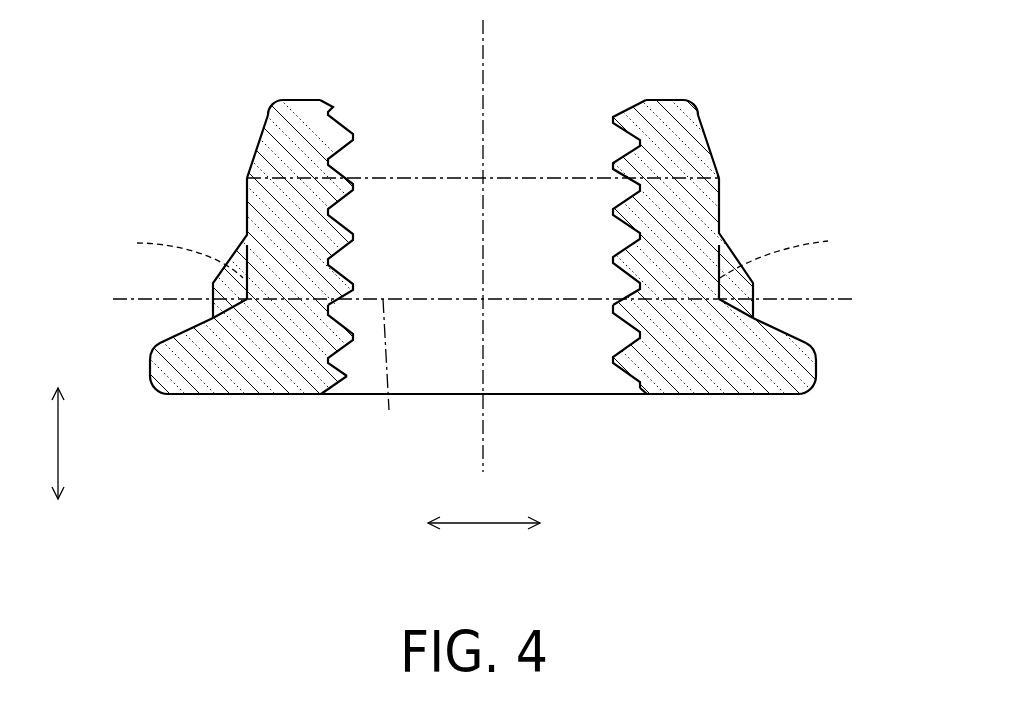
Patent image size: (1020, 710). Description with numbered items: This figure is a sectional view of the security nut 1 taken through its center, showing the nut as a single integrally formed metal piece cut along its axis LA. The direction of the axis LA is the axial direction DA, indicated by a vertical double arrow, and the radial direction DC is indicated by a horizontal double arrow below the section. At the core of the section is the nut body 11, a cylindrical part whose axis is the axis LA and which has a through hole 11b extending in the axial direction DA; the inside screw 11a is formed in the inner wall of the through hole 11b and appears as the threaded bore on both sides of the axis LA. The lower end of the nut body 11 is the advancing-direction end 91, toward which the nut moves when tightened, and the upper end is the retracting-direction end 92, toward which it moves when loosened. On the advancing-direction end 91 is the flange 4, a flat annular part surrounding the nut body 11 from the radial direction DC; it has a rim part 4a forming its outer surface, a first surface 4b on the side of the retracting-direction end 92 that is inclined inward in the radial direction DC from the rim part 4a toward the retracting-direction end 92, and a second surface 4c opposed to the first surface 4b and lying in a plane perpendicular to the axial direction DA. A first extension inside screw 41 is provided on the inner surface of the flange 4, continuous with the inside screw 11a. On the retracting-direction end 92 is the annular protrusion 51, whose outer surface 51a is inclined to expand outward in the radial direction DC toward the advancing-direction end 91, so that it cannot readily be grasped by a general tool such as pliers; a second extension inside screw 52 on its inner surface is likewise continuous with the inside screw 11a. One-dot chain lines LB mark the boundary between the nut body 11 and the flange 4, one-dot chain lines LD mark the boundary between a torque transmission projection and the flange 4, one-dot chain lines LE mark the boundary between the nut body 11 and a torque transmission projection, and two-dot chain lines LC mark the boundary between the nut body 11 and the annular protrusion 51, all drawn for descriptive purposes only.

The security nut 1 is at (836, 54).
The flange 4 is at (800, 370).
The rim part 4a is at (152, 368).
The first surface 4b is at (786, 333).
The second surface 4c is at (788, 397).
The nut body 11 is at (272, 222).
The inside screw 11a is at (623, 363).
The through hole 11b is at (422, 398).
The first extension inside screw 41 is at (627, 392).
The annular protrusion 51 is at (282, 133).
The outer surface 51a is at (258, 140).
The second extension inside screw 52 is at (627, 165).
The advancing-direction end 91 is at (307, 303).
The retracting-direction end 92 is at (310, 172).
The axis LA is at (486, 44).
The one-dot chain lines LB is at (380, 376).
The two-dot chain lines LC is at (692, 176).
The one-dot chain lines LD is at (487, 292).
The one-dot chain lines LE is at (483, 251).
The axial direction DA is at (38, 443).
The radial direction DC is at (484, 536).